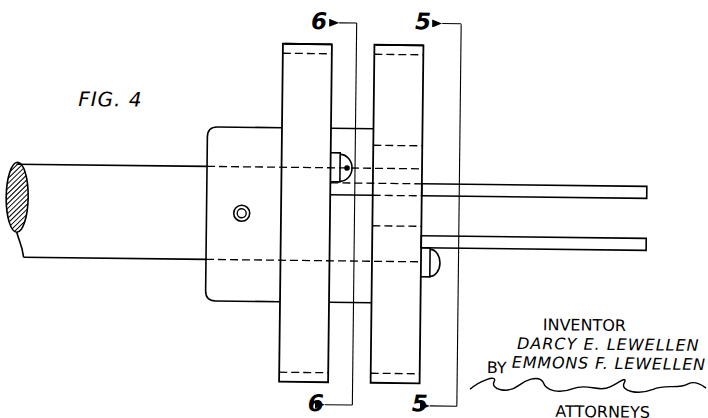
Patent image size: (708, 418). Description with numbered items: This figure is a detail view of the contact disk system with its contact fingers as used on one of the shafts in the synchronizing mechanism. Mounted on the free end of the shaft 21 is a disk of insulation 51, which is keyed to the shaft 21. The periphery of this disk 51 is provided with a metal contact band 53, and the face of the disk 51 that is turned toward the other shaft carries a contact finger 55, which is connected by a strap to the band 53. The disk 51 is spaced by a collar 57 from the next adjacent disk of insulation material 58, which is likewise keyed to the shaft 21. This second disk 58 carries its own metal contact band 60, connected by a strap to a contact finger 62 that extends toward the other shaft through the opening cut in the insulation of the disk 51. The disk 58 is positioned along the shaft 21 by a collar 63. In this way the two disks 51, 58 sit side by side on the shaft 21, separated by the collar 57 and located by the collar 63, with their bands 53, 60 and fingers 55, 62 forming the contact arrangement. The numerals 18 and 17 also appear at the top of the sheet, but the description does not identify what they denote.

The shaft 21 is at (60, 176).
The hub block 63 is at (245, 133).
The first disc 58 is at (281, 72).
The periphery of first disc 60 is at (290, 44).
The retaining clip 57 is at (338, 135).
The second disc 51 is at (422, 76).
The periphery of second disc 53 is at (388, 44).
The upper rod 62 is at (506, 183).
The lower rod 55 is at (504, 247).
The element 18 is at (576, 9).
The element 17 is at (661, 16).